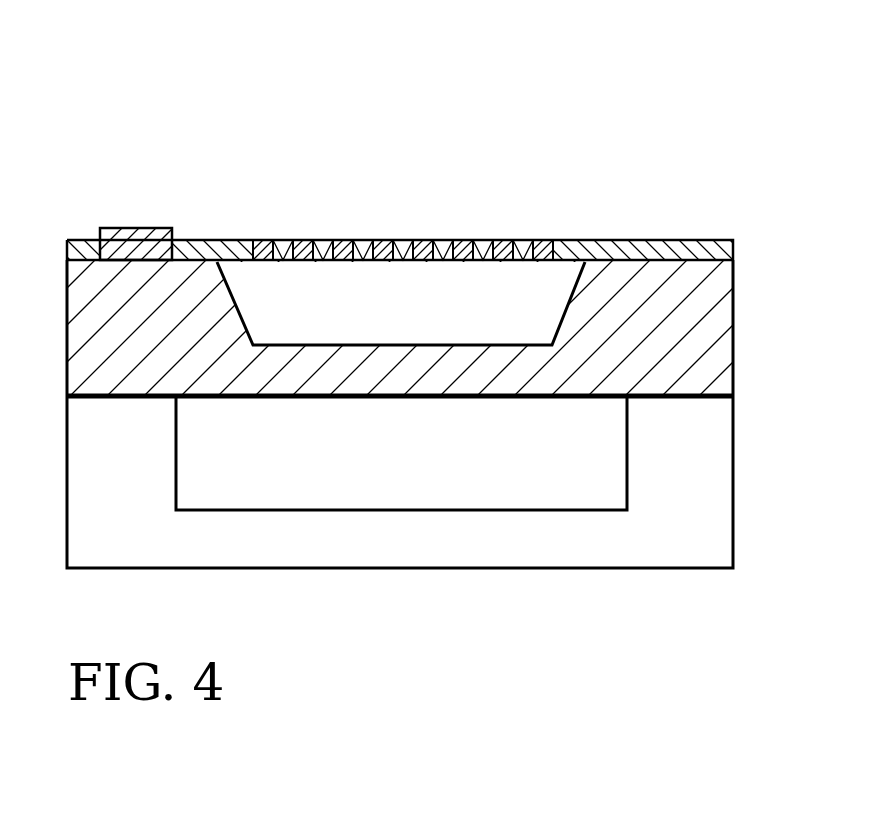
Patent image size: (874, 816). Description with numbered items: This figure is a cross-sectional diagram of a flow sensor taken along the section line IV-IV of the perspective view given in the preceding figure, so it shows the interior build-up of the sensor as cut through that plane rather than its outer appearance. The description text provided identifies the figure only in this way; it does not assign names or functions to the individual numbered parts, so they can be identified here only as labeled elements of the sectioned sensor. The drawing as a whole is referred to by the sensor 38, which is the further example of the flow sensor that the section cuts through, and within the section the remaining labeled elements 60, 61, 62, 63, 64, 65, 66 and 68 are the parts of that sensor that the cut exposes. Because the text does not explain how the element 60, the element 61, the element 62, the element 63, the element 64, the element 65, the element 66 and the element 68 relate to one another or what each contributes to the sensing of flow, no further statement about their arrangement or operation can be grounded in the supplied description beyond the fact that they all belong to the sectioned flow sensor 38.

The sensor device 38 is at (214, 163).
The substrate 60 is at (733, 325).
The patterned sensing layer 61 is at (403, 178).
The first material regions 62 is at (358, 242).
The second material regions 63 is at (440, 242).
The contact pad 64 is at (135, 228).
The top layer 65 is at (645, 240).
The cavity 66 is at (344, 322).
The base 68 is at (735, 483).